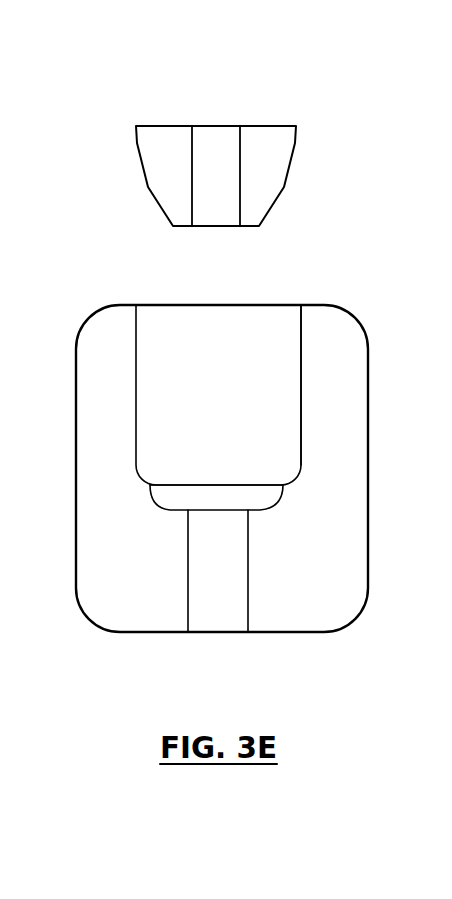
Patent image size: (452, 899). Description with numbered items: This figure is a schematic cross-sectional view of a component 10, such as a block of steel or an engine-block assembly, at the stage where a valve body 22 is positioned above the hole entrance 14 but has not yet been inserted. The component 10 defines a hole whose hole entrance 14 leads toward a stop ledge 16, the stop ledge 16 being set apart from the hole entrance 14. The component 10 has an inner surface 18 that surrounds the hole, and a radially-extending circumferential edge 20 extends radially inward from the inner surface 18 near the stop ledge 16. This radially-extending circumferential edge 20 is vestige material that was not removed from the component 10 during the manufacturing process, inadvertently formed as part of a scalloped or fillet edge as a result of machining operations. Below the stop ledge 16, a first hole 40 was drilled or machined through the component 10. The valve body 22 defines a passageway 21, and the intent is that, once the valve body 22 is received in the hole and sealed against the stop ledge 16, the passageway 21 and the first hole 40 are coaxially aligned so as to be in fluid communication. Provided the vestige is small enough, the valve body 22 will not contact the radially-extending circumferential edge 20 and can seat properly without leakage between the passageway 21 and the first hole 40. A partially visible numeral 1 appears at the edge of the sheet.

The component 10 is at (98, 335).
The hole entrance 14 is at (147, 305).
The inner surface 18 is at (300, 325).
The radially-extending circumferential edge 20 is at (294, 474).
The stop ledge 16 is at (276, 502).
The first hole 40 is at (217, 620).
The valve body 22 is at (167, 136).
The passageway 21 is at (222, 135).
The partially visible numeral 1 is at (445, 263).